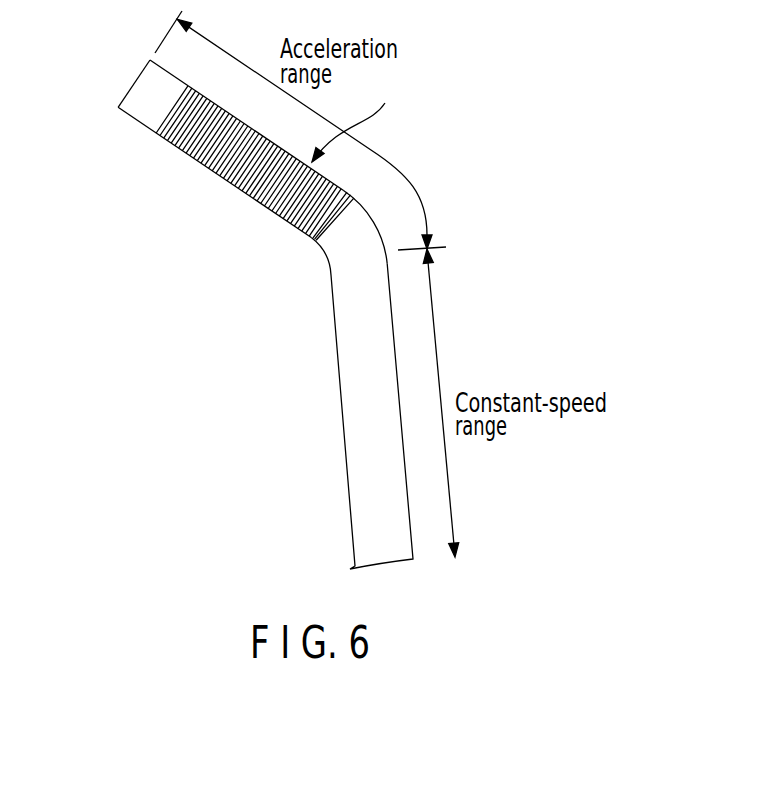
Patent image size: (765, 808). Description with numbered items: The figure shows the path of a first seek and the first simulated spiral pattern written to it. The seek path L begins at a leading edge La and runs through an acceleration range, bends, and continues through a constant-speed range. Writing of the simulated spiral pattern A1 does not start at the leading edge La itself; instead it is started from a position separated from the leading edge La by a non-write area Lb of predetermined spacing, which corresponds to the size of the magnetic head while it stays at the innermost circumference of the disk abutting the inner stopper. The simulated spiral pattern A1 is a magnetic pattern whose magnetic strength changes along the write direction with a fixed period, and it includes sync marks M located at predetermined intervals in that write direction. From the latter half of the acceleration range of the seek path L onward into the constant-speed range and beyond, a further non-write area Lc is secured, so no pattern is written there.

The seek path L is at (336, 311).
The leading edge La is at (134, 83).
The non-write area Lb is at (145, 110).
The non-write area Lc is at (356, 459).
The sync mark M is at (180, 149).
The simulated spiral pattern A1 is at (355, 118).